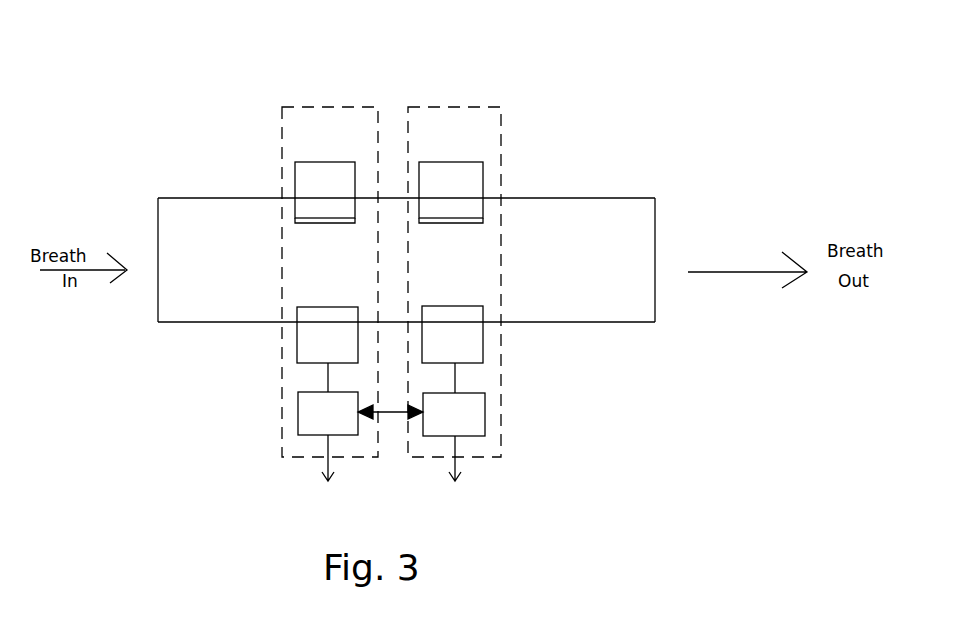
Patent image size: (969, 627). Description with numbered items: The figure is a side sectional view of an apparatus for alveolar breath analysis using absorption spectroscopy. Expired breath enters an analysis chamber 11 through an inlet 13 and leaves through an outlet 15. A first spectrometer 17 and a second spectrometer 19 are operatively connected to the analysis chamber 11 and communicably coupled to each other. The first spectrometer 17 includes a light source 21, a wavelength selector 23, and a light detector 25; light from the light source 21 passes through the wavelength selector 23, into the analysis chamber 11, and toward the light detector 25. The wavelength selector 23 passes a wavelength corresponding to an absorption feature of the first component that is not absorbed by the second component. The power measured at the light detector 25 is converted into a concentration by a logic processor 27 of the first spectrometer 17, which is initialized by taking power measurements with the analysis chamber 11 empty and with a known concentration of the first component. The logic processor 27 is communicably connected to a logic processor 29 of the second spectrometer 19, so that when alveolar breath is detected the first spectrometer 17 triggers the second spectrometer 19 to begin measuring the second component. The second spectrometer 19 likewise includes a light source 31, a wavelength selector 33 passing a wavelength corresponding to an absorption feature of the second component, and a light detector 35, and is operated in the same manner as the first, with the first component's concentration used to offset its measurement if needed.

The analysis chamber 11 is at (575, 198).
The inlet 13 is at (155, 287).
The outlet 15 is at (658, 288).
The first spectrometer 17 is at (322, 104).
The second spectrometer 19 is at (460, 105).
The light source 21 is at (294, 167).
The wavelength selector 23 is at (295, 222).
The light detector 25 is at (297, 342).
The logic processor 27 is at (298, 417).
The logic processor 29 is at (485, 415).
The light source 31 is at (485, 182).
The wavelength selector 33 is at (481, 222).
The light detector 35 is at (485, 334).